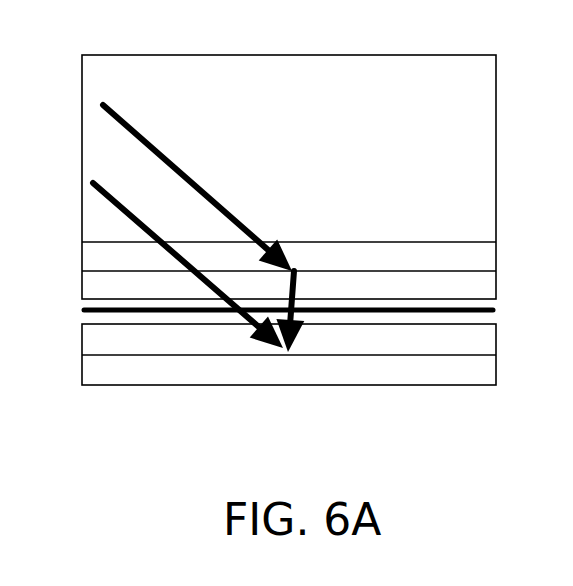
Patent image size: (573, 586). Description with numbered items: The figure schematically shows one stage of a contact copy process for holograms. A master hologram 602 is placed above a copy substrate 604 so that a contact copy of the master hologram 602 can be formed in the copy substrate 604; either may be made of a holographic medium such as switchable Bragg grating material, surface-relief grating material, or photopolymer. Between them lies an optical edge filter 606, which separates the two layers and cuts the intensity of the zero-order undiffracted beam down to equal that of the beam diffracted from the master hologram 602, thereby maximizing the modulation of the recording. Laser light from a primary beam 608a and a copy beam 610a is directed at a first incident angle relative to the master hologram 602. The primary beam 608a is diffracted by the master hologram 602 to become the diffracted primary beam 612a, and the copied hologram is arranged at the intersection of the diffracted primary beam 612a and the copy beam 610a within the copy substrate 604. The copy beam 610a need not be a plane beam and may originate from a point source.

The master hologram 602 is at (81, 255).
The copy substrate 604 is at (496, 343).
The optical edge filter 606 is at (493, 309).
The primary beam 608a is at (188, 172).
The copy beam 610a is at (117, 200).
The diffracted primary beam 612a is at (298, 337).